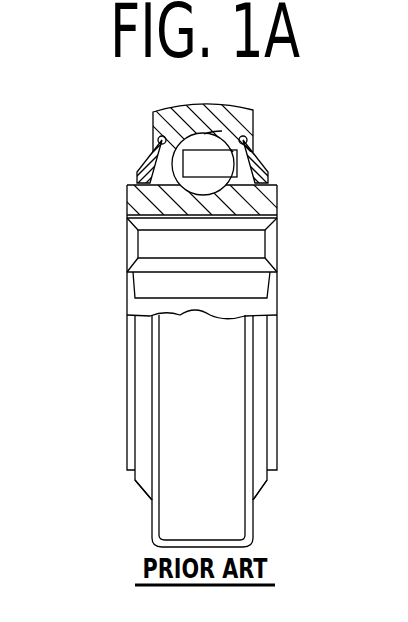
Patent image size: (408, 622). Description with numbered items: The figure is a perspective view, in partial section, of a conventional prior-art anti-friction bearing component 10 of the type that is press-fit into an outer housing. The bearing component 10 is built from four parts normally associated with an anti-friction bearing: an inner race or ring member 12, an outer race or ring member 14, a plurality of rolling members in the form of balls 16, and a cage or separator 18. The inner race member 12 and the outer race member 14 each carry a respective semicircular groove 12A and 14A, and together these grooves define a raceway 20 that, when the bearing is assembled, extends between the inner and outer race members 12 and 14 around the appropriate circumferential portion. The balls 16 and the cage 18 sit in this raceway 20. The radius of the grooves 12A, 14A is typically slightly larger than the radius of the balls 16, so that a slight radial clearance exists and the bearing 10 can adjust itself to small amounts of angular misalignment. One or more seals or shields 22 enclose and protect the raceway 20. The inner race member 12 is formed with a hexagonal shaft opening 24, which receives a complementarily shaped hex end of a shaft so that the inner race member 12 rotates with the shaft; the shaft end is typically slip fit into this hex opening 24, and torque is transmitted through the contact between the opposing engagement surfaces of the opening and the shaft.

The bearing component 10 is at (106, 412).
The inner race member 12 is at (138, 208).
The semicircular groove 12A is at (157, 216).
The outer race member 14 is at (230, 111).
The semicircular groove 14A is at (197, 133).
The balls 16 is at (148, 163).
The cage 18 is at (217, 162).
The raceway 20 is at (224, 130).
The seals or shields 22 is at (159, 137).
The hexagonal shaft opening 24 is at (260, 256).